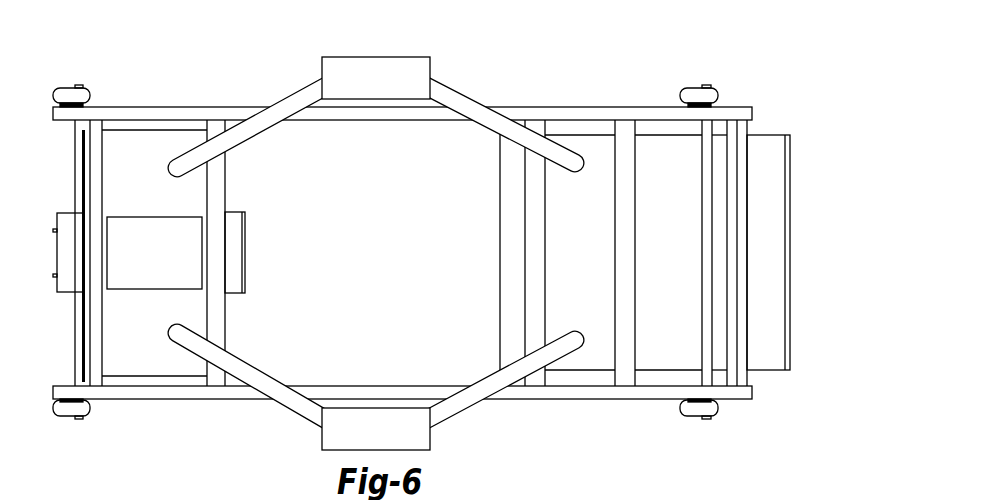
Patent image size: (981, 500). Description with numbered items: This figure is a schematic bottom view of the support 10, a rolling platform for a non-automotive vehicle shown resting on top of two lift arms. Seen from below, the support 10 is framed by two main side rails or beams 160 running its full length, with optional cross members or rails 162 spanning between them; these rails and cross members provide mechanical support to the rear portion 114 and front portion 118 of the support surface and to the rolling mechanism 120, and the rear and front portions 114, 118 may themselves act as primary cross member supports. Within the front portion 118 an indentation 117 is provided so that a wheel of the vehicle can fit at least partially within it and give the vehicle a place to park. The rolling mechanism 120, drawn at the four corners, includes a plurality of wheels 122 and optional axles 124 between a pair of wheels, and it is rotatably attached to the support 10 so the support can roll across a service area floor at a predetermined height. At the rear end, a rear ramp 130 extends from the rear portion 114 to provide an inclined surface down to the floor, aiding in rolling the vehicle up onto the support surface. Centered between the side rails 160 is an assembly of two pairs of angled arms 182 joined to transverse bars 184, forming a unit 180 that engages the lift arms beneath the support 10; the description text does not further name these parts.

The support 10 is at (759, 84).
The rear portion 114 is at (684, 230).
The indentation 117 is at (168, 264).
The front portion 118 is at (151, 163).
The rolling mechanism 120 is at (92, 86).
The wheels 122 is at (411, 60).
The axles 124 is at (75, 337).
The rear ramp 130 is at (767, 370).
The main side rails 160 is at (622, 399).
The cross members 162 is at (100, 205).
The handle assembly 180 is at (376, 246).
The handle arm 182 is at (236, 131).
The handle grip 184 is at (333, 57).